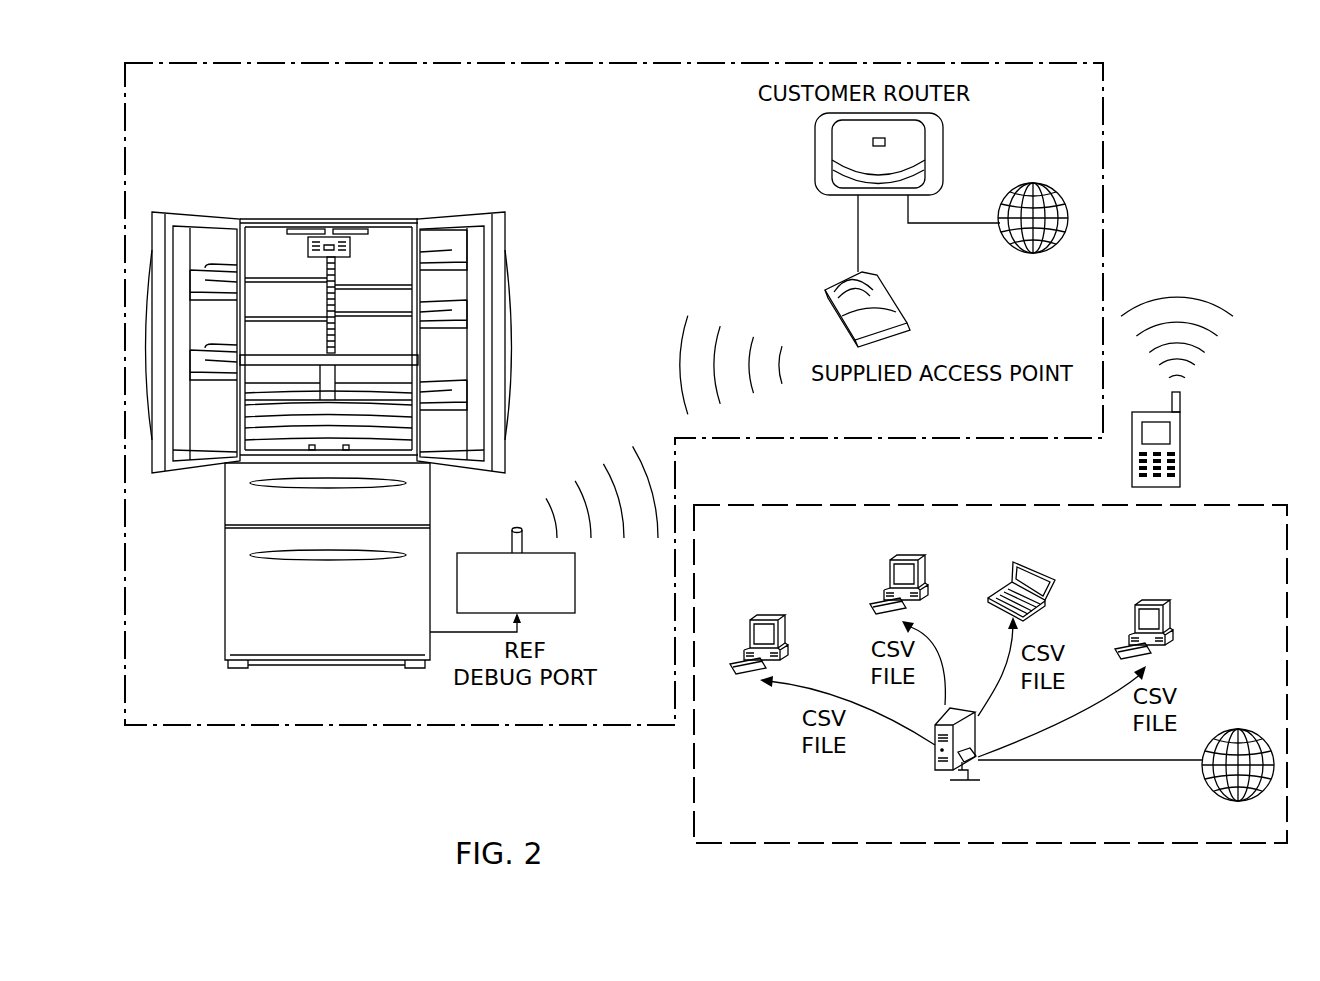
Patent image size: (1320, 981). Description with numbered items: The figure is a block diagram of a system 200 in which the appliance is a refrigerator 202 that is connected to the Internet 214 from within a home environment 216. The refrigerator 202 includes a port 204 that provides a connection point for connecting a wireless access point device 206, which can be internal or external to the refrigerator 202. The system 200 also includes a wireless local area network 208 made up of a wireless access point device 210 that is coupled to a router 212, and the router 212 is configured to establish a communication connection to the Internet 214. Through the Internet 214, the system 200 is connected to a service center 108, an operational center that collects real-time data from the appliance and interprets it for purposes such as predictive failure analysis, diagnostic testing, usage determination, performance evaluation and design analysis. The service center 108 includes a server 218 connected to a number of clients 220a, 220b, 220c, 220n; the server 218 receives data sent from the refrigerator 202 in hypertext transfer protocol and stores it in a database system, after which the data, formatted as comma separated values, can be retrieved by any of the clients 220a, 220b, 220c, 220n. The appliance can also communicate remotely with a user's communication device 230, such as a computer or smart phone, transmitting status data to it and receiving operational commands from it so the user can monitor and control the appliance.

The system 200 is at (1176, 114).
The home environment 216 is at (1103, 185).
The service center 108 is at (901, 501).
The refrigerator 202 is at (331, 219).
The port 204 is at (430, 632).
The wireless access point device 206 is at (575, 578).
The wireless local area network 208 is at (808, 232).
The wireless access point device 210 is at (906, 322).
The router 212 is at (815, 151).
The Internet 214 is at (1033, 183).
The server 218 is at (933, 772).
The client 220a is at (752, 618).
The client 220b is at (889, 558).
The client 220c is at (1014, 562).
The client 220n is at (1138, 604).
The communication device 230 is at (1180, 445).